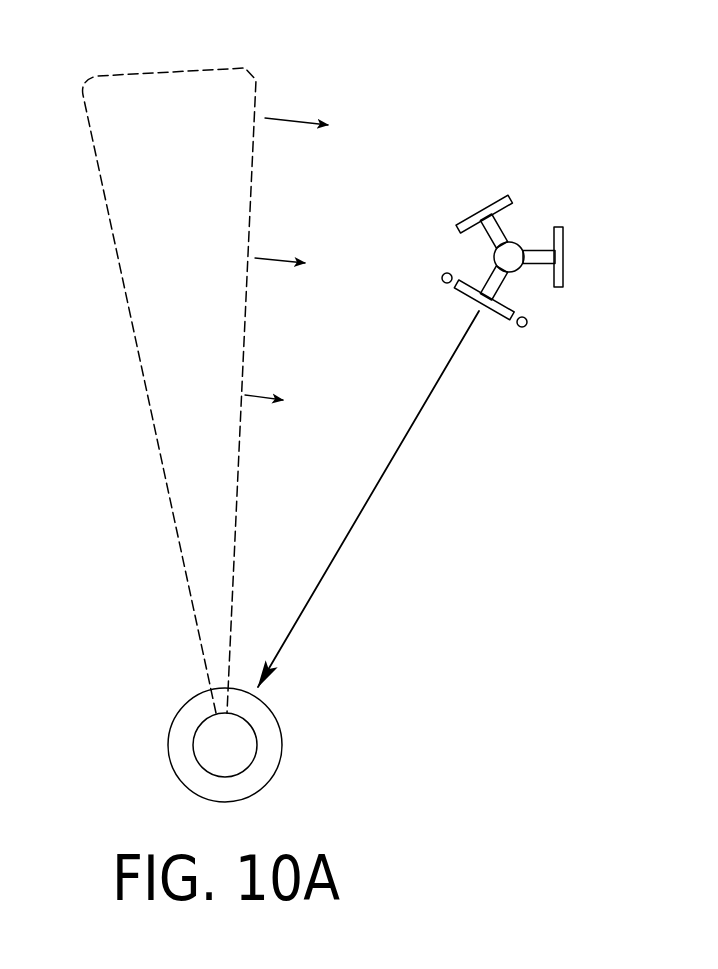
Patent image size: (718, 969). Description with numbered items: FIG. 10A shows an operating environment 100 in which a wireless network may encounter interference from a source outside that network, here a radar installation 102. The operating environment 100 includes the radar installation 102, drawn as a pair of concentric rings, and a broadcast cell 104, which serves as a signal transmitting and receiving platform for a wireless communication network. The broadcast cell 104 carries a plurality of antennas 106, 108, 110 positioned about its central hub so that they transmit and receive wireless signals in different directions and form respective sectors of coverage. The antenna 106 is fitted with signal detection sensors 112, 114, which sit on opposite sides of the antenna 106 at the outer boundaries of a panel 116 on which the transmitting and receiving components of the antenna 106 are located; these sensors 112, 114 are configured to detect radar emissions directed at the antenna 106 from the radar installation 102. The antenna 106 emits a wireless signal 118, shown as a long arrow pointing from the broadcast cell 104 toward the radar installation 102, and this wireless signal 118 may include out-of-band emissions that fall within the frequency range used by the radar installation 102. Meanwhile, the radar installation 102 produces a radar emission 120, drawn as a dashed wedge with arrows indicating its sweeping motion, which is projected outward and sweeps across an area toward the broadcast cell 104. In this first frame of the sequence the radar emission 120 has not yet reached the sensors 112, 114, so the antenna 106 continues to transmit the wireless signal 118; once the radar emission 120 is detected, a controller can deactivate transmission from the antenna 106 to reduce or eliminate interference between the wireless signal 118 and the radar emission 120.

The operating environment 100 is at (457, 68).
The radar installation 102 is at (287, 771).
The broadcast cell 104 is at (522, 289).
The antenna 106 is at (497, 338).
The antenna 108 is at (576, 257).
The antenna 110 is at (465, 221).
The signal detection sensor 112 is at (409, 277).
The signal detection sensor 114 is at (559, 322).
The panel 116 is at (487, 316).
The wireless signal 118 is at (374, 488).
The radar emission 120 is at (180, 440).